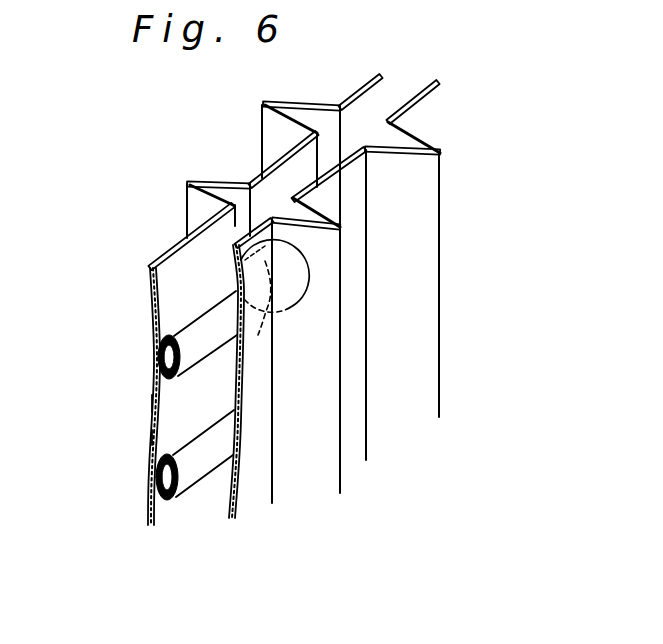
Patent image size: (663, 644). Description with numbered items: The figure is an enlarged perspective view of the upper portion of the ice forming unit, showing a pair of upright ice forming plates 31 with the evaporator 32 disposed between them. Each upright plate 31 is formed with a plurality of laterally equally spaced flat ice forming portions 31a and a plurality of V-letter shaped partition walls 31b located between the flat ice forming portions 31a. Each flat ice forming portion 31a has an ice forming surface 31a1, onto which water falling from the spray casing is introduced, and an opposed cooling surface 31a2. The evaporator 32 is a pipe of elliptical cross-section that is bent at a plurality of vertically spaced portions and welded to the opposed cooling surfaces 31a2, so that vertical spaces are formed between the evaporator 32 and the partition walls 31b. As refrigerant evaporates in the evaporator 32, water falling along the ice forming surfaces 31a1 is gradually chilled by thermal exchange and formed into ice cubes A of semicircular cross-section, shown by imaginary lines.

The upright ice forming plate 31 is at (152, 285).
The flat ice forming portion 31a is at (372, 81).
The V-letter shaped partition wall 31b is at (262, 105).
The ice forming surface 31a1 is at (151, 404).
The cooling surface 31a2 is at (162, 434).
The evaporator 32 is at (156, 355).
The ice cube A is at (297, 266).